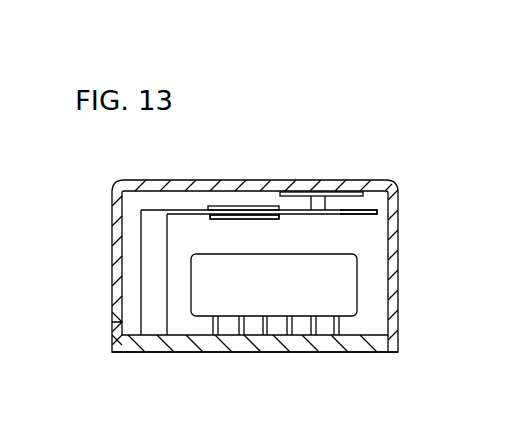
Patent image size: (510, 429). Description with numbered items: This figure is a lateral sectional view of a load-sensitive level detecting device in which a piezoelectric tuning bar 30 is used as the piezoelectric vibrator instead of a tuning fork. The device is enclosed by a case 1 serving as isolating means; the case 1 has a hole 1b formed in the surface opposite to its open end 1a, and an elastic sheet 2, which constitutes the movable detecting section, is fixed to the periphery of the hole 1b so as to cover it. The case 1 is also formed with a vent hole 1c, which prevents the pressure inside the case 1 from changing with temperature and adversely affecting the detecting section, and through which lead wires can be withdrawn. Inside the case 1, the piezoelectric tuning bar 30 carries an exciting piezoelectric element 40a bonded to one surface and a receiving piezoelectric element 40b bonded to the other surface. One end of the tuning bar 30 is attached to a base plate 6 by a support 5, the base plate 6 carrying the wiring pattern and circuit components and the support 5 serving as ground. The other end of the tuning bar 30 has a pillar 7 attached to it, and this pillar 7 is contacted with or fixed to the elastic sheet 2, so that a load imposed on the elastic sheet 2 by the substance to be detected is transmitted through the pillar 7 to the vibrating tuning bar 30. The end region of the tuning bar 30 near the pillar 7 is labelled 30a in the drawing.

The case 1 is at (398, 196).
The open end 1a is at (383, 352).
The hole 1b is at (338, 180).
The vent hole 1c is at (113, 308).
The elastic sheet 2 is at (325, 196).
The support 5 is at (140, 260).
The base plate 6 is at (180, 353).
The pillar 7 is at (313, 203).
The piezoelectric tuning bar 30 is at (179, 209).
The end portion of plate 30a is at (338, 214).
The exciting piezoelectric element 40a is at (247, 220).
The receiving piezoelectric element 40b is at (233, 205).